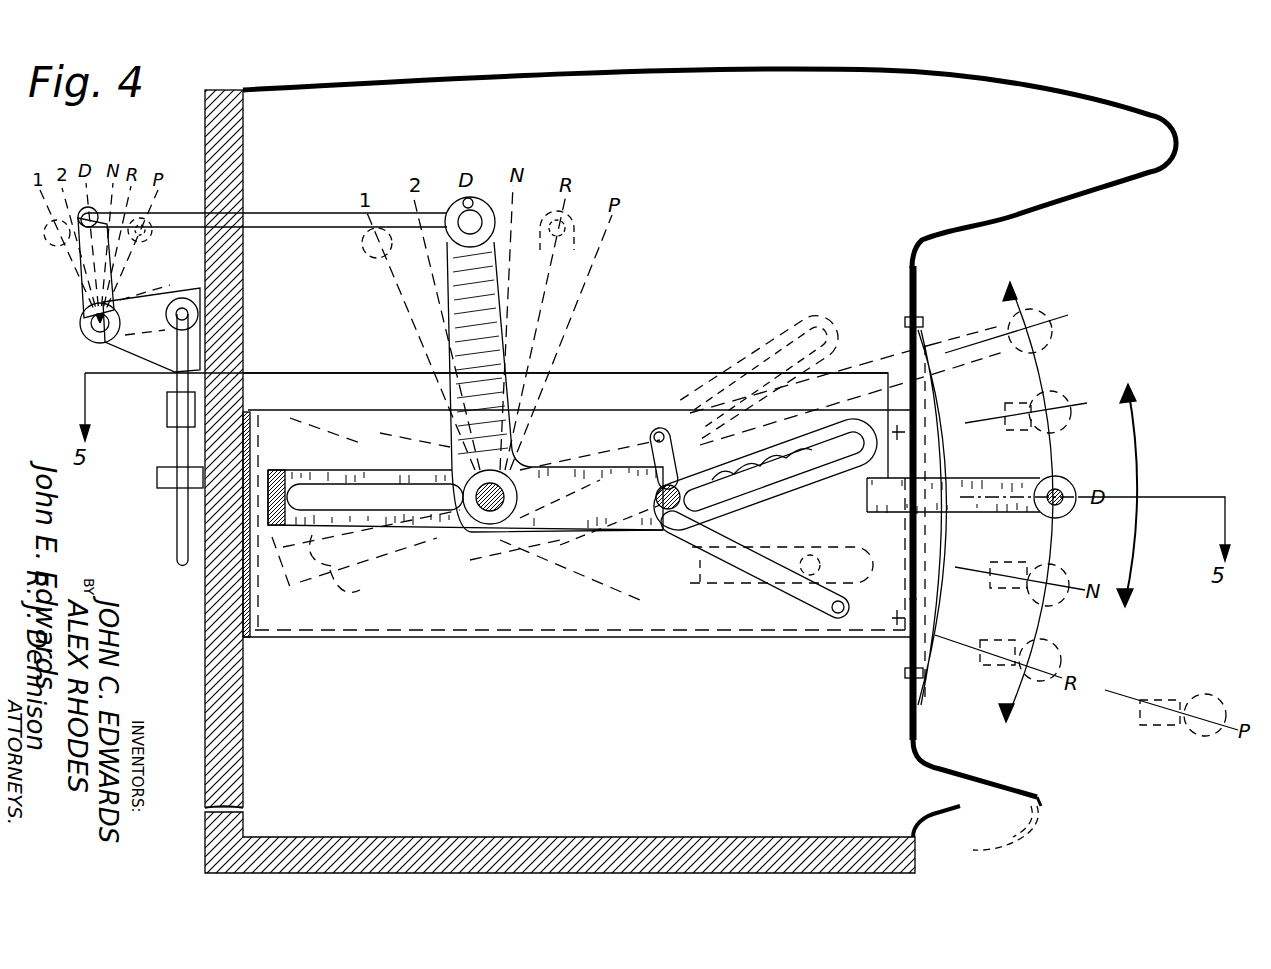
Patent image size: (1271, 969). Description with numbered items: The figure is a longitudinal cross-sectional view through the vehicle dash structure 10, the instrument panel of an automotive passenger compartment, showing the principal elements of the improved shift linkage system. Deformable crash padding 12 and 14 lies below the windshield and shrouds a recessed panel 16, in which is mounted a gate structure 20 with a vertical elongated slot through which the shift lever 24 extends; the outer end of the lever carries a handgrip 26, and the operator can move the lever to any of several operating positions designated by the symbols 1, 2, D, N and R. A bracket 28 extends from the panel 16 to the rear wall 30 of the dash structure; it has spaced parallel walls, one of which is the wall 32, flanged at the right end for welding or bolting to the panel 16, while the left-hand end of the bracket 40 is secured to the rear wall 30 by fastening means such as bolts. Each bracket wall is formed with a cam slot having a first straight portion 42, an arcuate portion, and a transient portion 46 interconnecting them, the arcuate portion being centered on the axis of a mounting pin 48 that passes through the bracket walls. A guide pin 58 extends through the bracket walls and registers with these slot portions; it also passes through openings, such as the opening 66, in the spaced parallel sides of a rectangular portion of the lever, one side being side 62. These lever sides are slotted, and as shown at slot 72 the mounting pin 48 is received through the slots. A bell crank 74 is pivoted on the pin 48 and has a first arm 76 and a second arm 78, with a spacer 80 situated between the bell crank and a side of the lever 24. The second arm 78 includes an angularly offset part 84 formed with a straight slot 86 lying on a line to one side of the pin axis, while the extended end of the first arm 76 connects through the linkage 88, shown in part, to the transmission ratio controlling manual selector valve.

The vehicle dash structure 10 is at (921, 277).
The crash padding 12 is at (1165, 162).
The crash padding 14 is at (1040, 788).
The recessed panel 16 is at (920, 717).
The gate structure 20 is at (944, 550).
The shift lever 24 is at (988, 478).
The handgrip 26 is at (1205, 694).
The bracket 28 is at (630, 412).
The rear wall 30 is at (248, 281).
The wall 32 is at (565, 410).
The left-hand end of the bracket 40 is at (270, 456).
The first straight portion 42 is at (808, 552).
The transient portion 46 is at (740, 548).
The mounting pin 48 is at (500, 512).
The guide pin 58 is at (838, 620).
The side 62 is at (420, 480).
The opening 66 is at (658, 438).
The slot 72 is at (332, 487).
The bell crank 74 is at (449, 325).
The first arm 76 is at (452, 300).
The second arm 78 is at (600, 432).
The spacer 80 is at (488, 522).
The angularly offset part 84 is at (878, 545).
The straight slot 86 is at (790, 462).
The linkage 88 is at (293, 213).
The operating position symbol 1 is at (1012, 327).
The operating position symbol 2 is at (1032, 408).